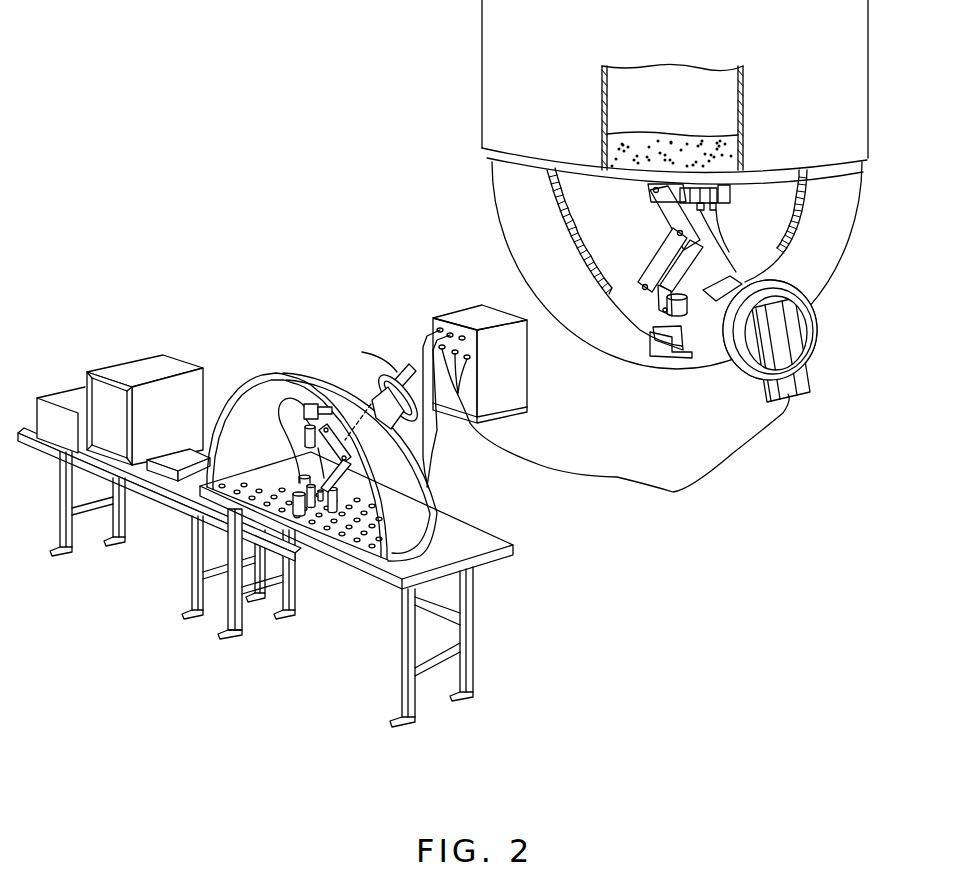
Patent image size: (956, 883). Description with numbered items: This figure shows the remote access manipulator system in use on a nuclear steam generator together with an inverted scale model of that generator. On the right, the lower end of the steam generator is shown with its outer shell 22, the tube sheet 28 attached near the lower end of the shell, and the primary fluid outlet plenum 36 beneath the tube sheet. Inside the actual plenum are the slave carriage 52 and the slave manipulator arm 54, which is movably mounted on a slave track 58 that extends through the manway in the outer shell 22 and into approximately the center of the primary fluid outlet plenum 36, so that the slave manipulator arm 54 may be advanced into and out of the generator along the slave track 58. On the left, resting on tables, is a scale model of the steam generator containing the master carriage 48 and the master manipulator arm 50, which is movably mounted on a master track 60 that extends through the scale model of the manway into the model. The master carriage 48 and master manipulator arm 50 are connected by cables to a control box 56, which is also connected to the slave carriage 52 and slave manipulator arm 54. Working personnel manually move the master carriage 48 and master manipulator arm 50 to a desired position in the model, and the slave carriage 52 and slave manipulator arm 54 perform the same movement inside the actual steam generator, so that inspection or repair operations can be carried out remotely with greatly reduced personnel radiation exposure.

The outer shell 22 is at (857, 69).
The tube sheet 28 is at (652, 133).
The primary fluid outlet plenum 36 is at (577, 180).
The master carriage 48 is at (287, 483).
The master manipulator arm 50 is at (377, 462).
The slave carriage 52 is at (709, 228).
The slave manipulator arm 54 is at (670, 246).
The control box 56 is at (462, 318).
The slave track 58 is at (767, 386).
The master track 60 is at (320, 405).